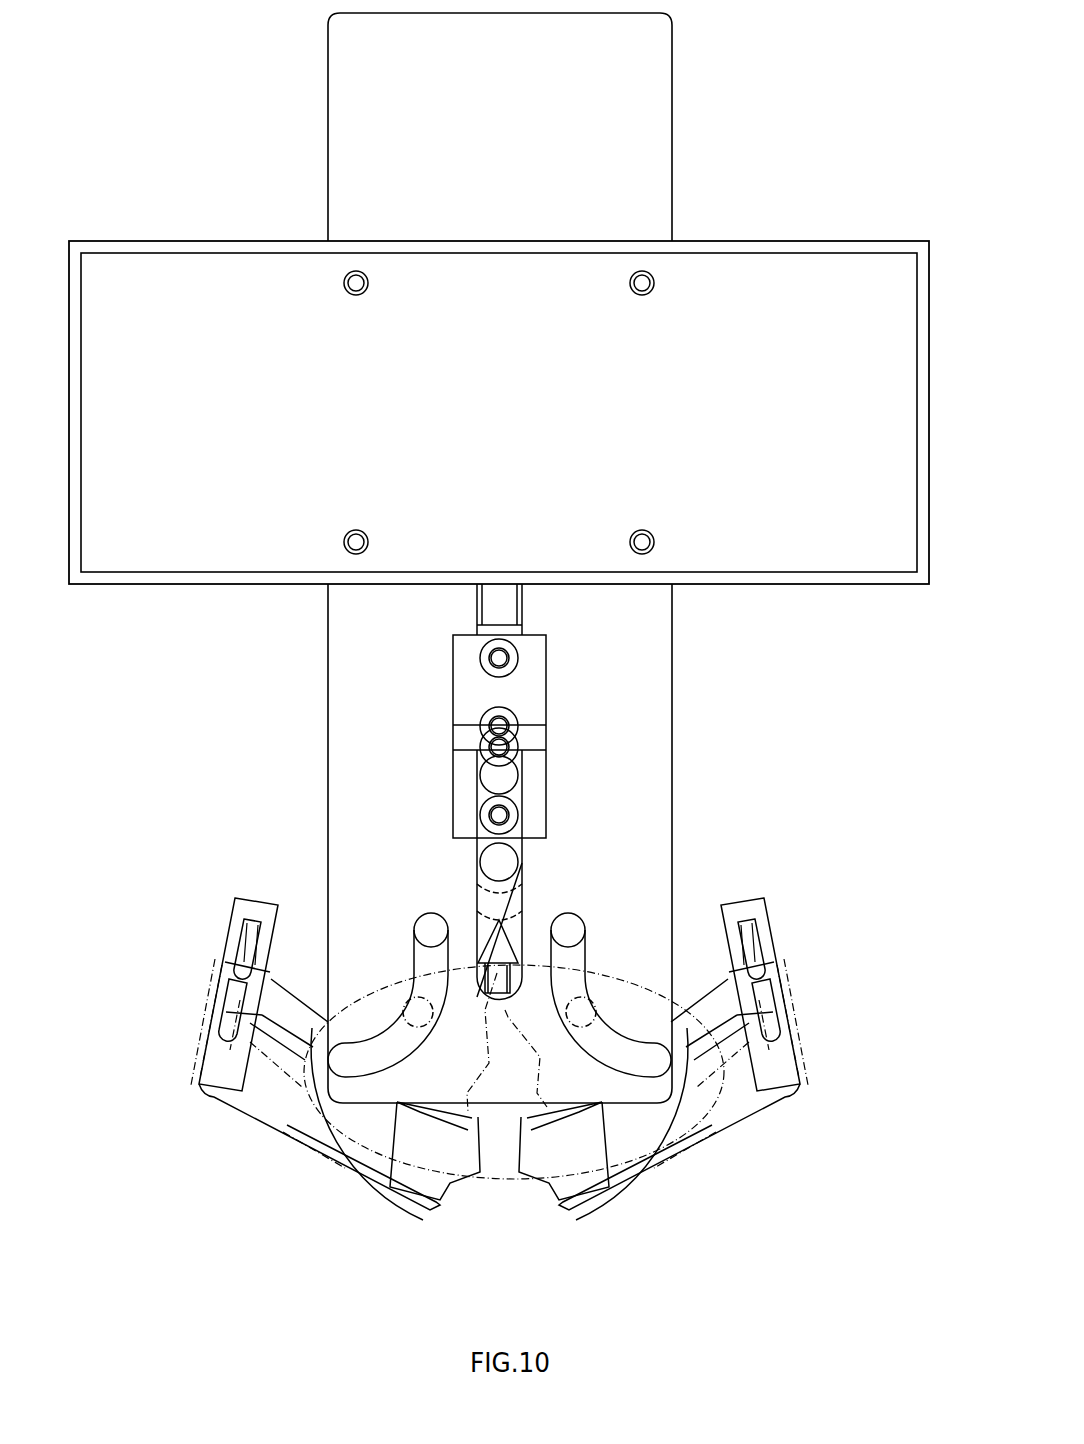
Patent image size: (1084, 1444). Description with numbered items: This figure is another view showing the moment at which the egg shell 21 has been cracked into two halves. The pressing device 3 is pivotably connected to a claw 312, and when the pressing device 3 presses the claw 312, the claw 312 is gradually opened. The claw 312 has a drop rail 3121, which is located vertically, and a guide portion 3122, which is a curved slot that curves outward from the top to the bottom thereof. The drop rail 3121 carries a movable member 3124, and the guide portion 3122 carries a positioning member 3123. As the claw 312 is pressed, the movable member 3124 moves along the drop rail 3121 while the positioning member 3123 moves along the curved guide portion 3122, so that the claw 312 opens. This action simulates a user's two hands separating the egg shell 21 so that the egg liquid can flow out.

The pressing device 3 is at (186, 164).
The egg shell 21 is at (323, 1140).
The claw 312 is at (292, 1013).
The drop rail 3121 is at (513, 797).
The guide portion 3122 is at (600, 1052).
The positioning member 3123 is at (567, 930).
The movable member 3124 is at (530, 680).